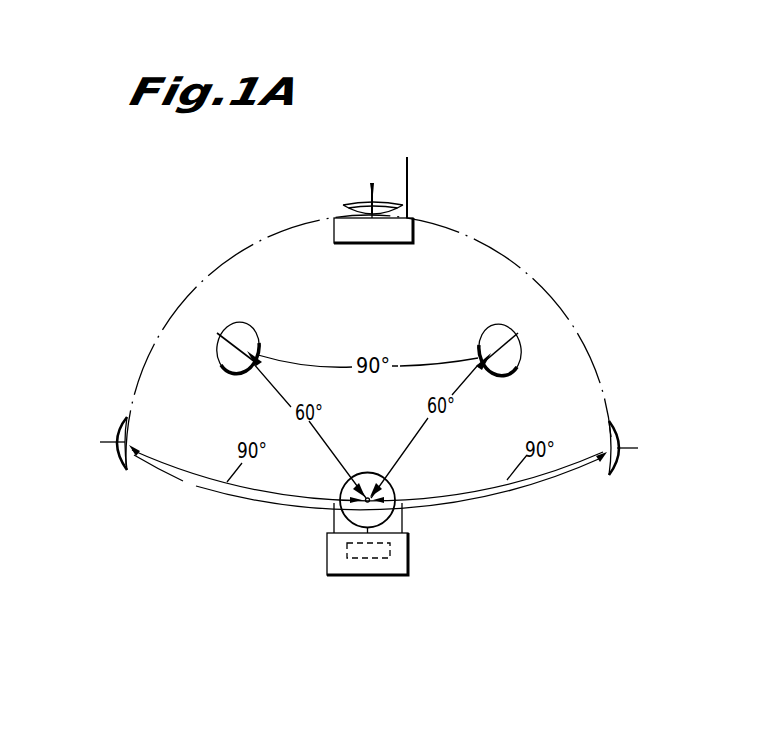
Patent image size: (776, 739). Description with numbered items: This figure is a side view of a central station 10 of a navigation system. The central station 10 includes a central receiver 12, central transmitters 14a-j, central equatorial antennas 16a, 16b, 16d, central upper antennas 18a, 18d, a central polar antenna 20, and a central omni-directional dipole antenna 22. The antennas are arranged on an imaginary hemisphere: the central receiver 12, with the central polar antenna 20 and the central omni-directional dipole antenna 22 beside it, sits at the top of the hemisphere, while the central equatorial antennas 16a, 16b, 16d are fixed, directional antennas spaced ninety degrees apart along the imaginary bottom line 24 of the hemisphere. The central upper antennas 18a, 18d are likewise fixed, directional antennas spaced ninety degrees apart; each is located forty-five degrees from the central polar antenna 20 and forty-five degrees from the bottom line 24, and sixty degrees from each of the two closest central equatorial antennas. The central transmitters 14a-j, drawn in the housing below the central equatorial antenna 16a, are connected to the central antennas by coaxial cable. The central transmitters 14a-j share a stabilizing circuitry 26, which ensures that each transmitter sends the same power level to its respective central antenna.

The central station 10 is at (511, 82).
The central receiver 12 is at (413, 222).
The central transmitters 14a-j is at (402, 565).
The central equatorial antenna 16a is at (395, 492).
The central equatorial antenna 16b is at (622, 427).
The central equatorial antenna 16d is at (118, 468).
The central upper antenna 18a is at (522, 355).
The central upper antenna 18d is at (222, 355).
The central polar antenna 20 is at (355, 207).
The central omni-directional dipole antenna 22 is at (407, 157).
The imaginary bottom line 24 is at (260, 495).
The stabilizing circuitry 26 is at (355, 565).